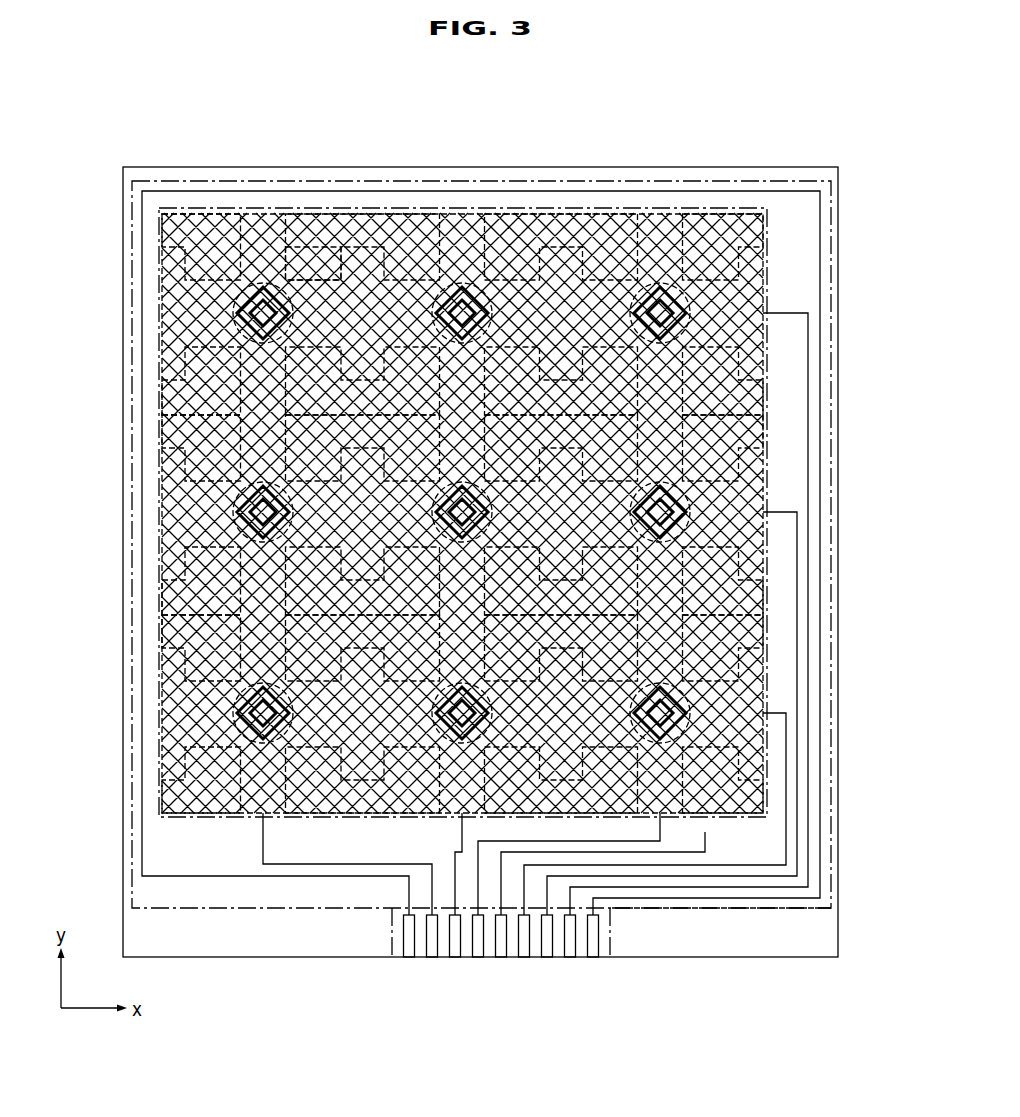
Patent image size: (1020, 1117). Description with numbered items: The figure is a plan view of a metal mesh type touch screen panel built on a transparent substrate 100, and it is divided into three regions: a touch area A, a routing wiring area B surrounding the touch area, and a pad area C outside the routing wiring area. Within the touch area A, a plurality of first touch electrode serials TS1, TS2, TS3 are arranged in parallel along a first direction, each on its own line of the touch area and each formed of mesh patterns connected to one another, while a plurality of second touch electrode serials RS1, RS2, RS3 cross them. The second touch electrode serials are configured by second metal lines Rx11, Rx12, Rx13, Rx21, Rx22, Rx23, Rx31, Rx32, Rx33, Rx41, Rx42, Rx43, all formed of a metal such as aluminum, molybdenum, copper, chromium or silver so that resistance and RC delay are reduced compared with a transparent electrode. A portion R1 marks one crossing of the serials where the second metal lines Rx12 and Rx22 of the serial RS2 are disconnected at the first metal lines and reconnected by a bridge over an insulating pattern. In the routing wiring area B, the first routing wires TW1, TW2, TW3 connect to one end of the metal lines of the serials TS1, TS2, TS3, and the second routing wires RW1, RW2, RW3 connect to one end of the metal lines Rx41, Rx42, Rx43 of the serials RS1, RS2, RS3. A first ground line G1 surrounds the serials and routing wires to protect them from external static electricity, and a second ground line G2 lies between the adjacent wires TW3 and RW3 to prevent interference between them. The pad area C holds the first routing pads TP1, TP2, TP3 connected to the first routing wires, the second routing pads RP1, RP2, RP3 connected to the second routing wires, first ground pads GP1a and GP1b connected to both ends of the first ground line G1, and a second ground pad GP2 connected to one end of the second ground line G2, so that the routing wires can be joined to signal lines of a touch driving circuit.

The transparent substrate 100 is at (838, 930).
The touch area A is at (737, 173).
The routing wiring area B is at (690, 924).
The pad area C is at (618, 942).
The first ground line G1 is at (142, 845).
The second ground line G2 is at (705, 840).
The 2-1 touch electrode serial RS1 is at (263, 199).
The 2-2 touch electrode serial RS2 is at (452, 199).
The 2-3 touch electrode serial RS3 is at (651, 199).
The portion R1 is at (313, 282).
The second metal line Rx11 is at (185, 268).
The second metal line Rx12 is at (463, 240).
The second metal line Rx13 is at (725, 265).
The second metal line Rx21 is at (185, 358).
The second metal line Rx22 is at (457, 438).
The second metal line Rx23 is at (725, 358).
The second metal line Rx31 is at (185, 558).
The second metal line Rx32 is at (457, 635).
The second metal line Rx33 is at (725, 560).
The second metal line Rx41 is at (202, 763).
The second metal line Rx42 is at (457, 797).
The second metal line Rx43 is at (725, 763).
The 1-1 touch electrode serial TS1 is at (150, 313).
The 1-2 touch electrode serial TS2 is at (150, 512).
The 1-3 touch electrode serial TS3 is at (150, 713).
The 1-1 routing wire TW1 is at (795, 313).
The 1-2 routing wire TW2 is at (795, 512).
The 1-3 routing wire TW3 is at (783, 713).
The 2-1 routing wire RW1 is at (263, 838).
The 2-2 routing wire RW2 is at (462, 838).
The 2-3 routing wire RW3 is at (660, 830).
The first ground pad GP1a is at (409, 957).
The first ground pad GP1b is at (593, 957).
The second ground pad GP2 is at (501, 957).
The second routing pad RP1 is at (432, 957).
The second routing pad RP2 is at (455, 957).
The second routing pad RP3 is at (478, 957).
The first routing pad TP1 is at (570, 957).
The first routing pad TP2 is at (547, 957).
The first routing pad TP3 is at (524, 957).